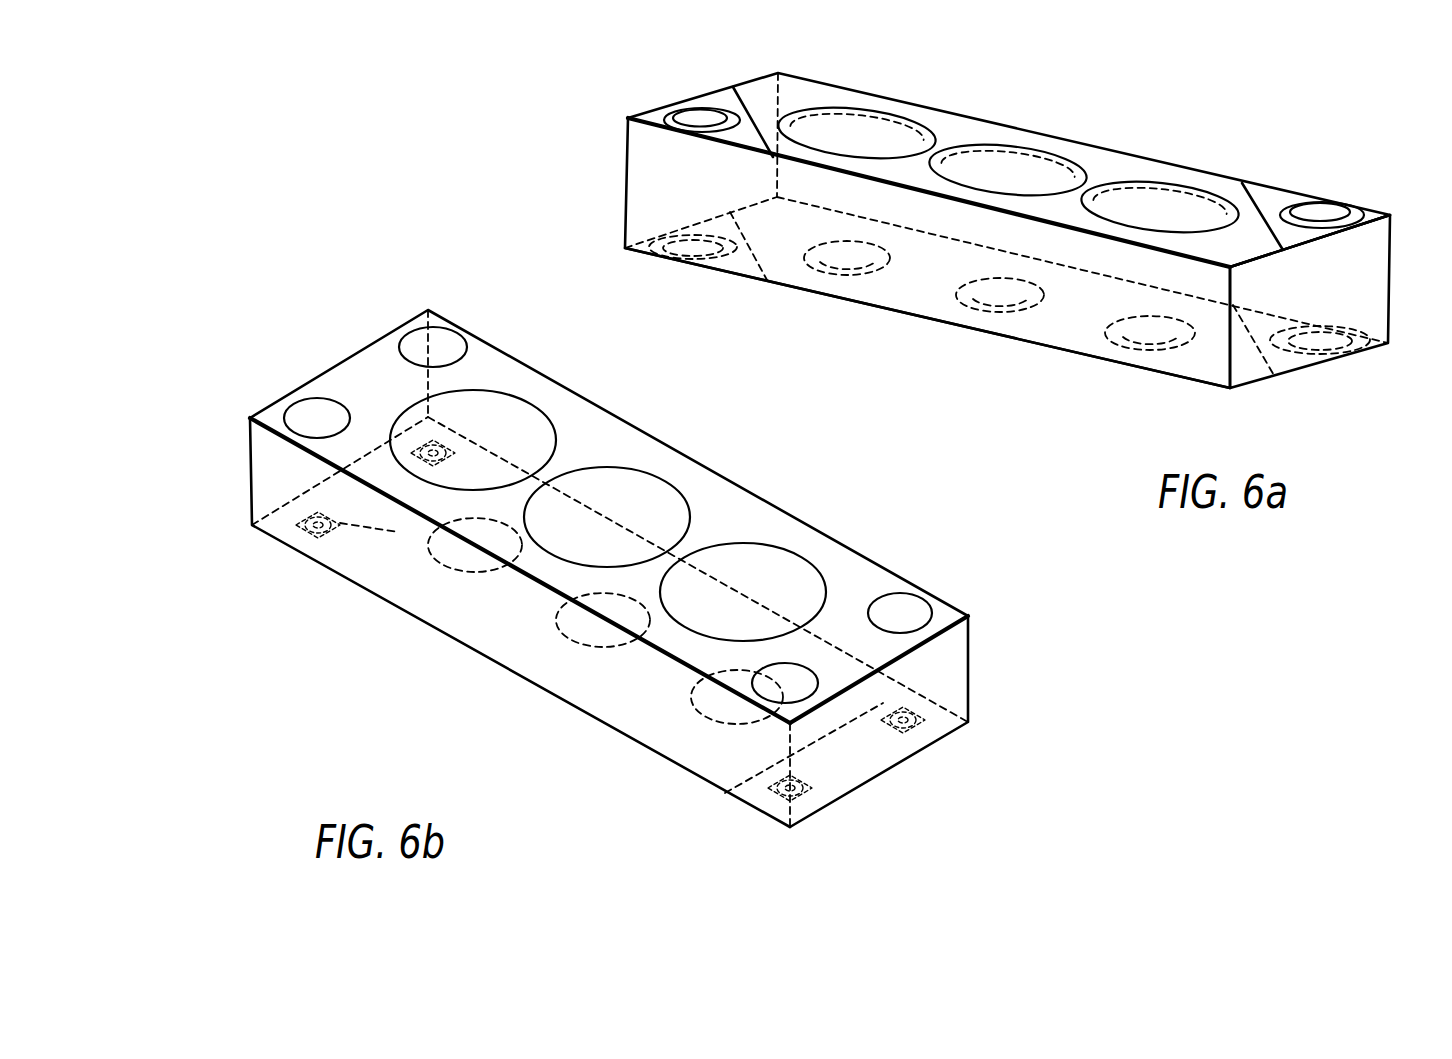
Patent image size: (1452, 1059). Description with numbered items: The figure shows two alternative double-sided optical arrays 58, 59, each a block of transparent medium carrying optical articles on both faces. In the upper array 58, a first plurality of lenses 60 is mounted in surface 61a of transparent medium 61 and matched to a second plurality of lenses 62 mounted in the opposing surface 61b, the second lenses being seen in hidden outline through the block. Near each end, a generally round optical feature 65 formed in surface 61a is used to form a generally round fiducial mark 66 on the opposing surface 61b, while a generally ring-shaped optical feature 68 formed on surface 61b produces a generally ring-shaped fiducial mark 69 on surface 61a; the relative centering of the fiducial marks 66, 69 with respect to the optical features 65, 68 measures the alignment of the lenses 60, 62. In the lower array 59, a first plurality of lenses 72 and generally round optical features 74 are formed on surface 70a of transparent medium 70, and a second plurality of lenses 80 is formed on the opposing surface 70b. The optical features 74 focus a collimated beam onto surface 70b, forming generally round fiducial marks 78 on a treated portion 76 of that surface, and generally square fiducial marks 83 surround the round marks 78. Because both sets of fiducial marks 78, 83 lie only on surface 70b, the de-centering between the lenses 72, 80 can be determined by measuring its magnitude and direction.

In FIG. 6A, the double-sided optical array 58 is at (1240, 99).
In FIG. 6B, the double-sided optical array 59 is at (460, 280).
In FIG. 6A, the first plurality of lenses 60 is at (875, 117).
In FIG. 6A, the transparent medium 61 is at (1038, 254).
In FIG. 6A, the opposing surface 61a is at (1278, 255).
In FIG. 6A, the opposing surface 61b is at (1205, 375).
In FIG. 6A, the second plurality of lenses 62 is at (838, 283).
In FIG. 6A, the optical feature 65 is at (698, 108).
In FIG. 6A, the fiducial mark 66 is at (690, 255).
In FIG. 6A, the optical feature 68 is at (652, 253).
In FIG. 6A, the fiducial mark 69 is at (665, 119).
In FIG. 6B, the transparent medium 70 is at (623, 568).
In FIG. 6B, the surface 70a is at (747, 500).
In FIG. 6B, the opposing surface 70b is at (598, 722).
In FIG. 6B, the first plurality of lenses 72 is at (512, 400).
In FIG. 6B, the optical feature 74 is at (410, 342).
In FIG. 6B, the treated portion 76 is at (265, 535).
In FIG. 6B, the fiducial mark 78 is at (428, 465).
In FIG. 6B, the second plurality of lenses 80 is at (450, 568).
In FIG. 6B, the fiducial mark 83 is at (412, 430).